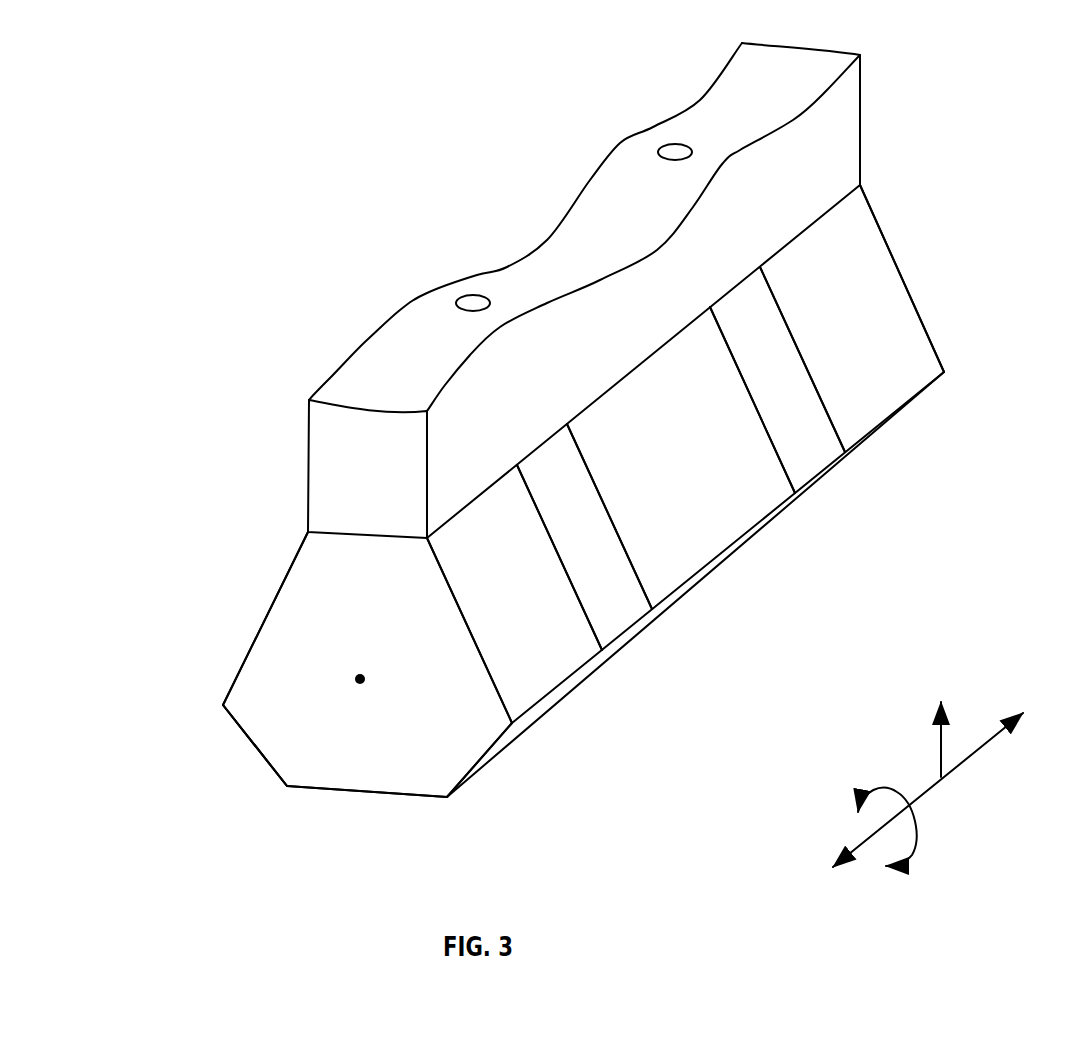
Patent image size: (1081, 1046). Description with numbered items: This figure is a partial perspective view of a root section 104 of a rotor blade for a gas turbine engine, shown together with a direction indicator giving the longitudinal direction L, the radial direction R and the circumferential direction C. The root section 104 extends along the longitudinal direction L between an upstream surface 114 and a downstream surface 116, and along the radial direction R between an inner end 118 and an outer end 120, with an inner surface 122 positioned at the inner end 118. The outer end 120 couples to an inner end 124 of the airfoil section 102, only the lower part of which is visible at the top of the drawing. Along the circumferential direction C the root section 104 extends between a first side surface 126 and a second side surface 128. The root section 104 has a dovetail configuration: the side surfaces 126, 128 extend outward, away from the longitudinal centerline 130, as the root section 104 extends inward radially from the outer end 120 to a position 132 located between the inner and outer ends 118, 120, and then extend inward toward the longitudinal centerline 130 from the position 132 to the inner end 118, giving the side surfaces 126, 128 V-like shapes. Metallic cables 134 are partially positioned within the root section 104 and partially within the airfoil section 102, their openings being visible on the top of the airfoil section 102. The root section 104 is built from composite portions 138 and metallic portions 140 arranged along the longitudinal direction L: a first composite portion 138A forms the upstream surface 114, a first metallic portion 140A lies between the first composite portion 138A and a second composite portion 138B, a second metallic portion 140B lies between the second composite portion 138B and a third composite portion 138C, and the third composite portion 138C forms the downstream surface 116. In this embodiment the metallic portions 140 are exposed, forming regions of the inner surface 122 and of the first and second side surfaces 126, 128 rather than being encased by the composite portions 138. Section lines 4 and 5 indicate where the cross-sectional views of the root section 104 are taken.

The airfoil section 102 is at (325, 470).
The root section 104 is at (216, 256).
The upstream surface 114 is at (270, 742).
The downstream surface 116 is at (927, 330).
The inner end 118 is at (449, 824).
The outer end 120 is at (258, 602).
The inner surface 122 is at (380, 795).
The inner end 124 is at (892, 180).
The first side surface 126 is at (693, 547).
The second side surface 128 is at (248, 655).
The longitudinal centerline 130 is at (363, 677).
The position 132 is at (196, 728).
The metallic cable 134 is at (473, 302).
The composite portions 138 is at (752, 486).
The first composite portion 138A is at (537, 672).
The second composite portion 138B is at (733, 507).
The third composite portion 138C is at (883, 377).
The metallic portions 140 is at (767, 492).
The first metallic portion 140A is at (630, 612).
The second metallic portion 140B is at (813, 455).
The line 4- 4 is at (958, 293).
The line 5- 5 is at (283, 577).
The radial direction R is at (943, 737).
The longitudinal direction L is at (962, 763).
The circumferential direction C is at (922, 840).